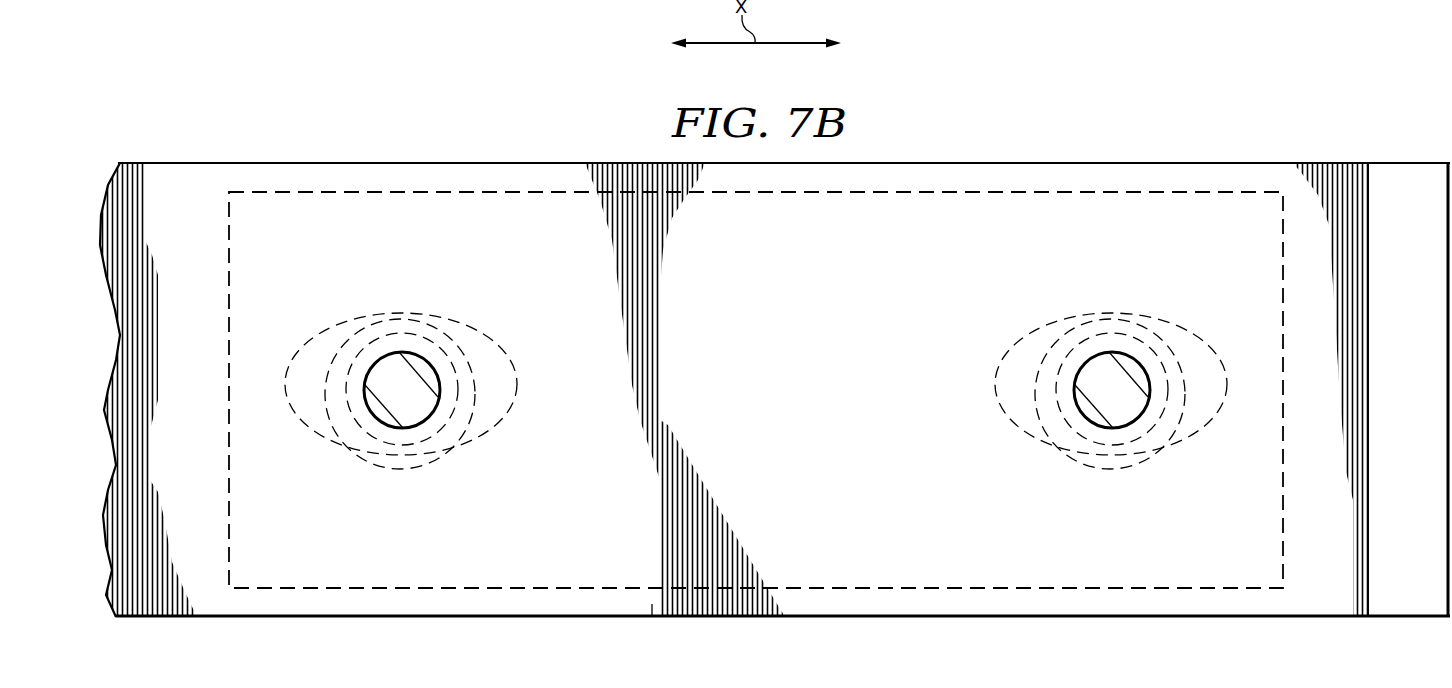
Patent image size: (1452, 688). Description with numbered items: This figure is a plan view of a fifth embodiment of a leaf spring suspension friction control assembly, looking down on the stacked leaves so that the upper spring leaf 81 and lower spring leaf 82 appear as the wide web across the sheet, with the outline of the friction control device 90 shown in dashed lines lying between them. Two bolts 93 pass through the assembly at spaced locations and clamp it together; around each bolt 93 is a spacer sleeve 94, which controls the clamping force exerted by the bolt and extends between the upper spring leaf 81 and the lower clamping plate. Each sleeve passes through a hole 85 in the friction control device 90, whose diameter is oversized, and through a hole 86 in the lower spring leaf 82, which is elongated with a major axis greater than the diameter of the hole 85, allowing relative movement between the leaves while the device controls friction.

The upper spring leaf 81 is at (208, 208).
The lower spring leaf 82 is at (1422, 208).
The hole in friction control device 85 is at (468, 432).
The hole in lower spring leaf 86 is at (317, 436).
The friction control device 90 is at (1302, 567).
The bolt 93 is at (391, 378).
The spacer sleeve 94 is at (440, 397).